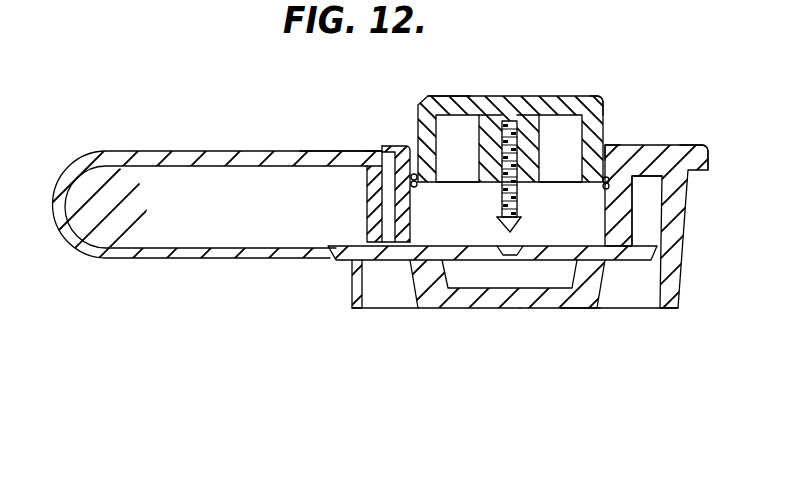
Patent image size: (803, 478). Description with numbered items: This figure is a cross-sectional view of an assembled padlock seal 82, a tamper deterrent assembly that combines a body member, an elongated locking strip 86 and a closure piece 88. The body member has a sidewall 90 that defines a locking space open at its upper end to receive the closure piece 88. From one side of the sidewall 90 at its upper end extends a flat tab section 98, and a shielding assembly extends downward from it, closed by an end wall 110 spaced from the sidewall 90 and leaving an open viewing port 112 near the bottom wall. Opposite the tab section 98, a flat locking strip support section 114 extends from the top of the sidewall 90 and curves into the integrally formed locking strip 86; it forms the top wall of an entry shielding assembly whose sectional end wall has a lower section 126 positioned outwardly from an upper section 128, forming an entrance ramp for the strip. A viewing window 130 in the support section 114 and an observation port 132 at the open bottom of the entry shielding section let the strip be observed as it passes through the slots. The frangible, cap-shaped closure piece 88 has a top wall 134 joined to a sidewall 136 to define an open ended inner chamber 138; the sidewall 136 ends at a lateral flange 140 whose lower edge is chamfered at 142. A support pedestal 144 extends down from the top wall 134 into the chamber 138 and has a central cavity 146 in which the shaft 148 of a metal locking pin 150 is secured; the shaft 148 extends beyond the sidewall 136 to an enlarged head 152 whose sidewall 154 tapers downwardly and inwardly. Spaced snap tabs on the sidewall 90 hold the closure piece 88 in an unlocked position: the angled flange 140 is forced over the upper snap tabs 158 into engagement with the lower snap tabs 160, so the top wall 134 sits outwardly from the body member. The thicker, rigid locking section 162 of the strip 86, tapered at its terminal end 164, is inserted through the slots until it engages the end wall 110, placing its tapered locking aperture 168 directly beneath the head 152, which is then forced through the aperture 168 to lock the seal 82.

The padlock seal 82 is at (616, 356).
The elongated locking strip 86 is at (55, 192).
The closure piece 88 is at (413, 150).
The sidewall 90 is at (632, 224).
The flat tab section 98 is at (692, 146).
The end wall 110 is at (680, 216).
The open viewing port 112 is at (616, 309).
The flat locking strip support section 114 is at (380, 151).
The lower section of end wall 126 is at (352, 290).
The upper section of end wall 128 is at (367, 200).
The viewing window 130 is at (345, 163).
The observation port 132 is at (376, 309).
The top wall 134 is at (447, 96).
The sidewall 136 is at (600, 110).
The inner chamber 138 is at (556, 112).
The lateral flange 140 is at (607, 146).
The chamfered lower edge 142 is at (414, 190).
The support pedestal 144 is at (478, 114).
The central cavity 146 is at (500, 170).
The shaft 148 is at (512, 137).
The metal locking pin 150 is at (517, 197).
The enlarged head 152 is at (514, 230).
The tapered sidewall of head 154 is at (505, 224).
The upper snap tabs 158 is at (416, 174).
The lower snap tabs 160 is at (605, 188).
The locking section 162 is at (403, 262).
The terminal end 164 is at (655, 261).
The locking aperture 168 is at (504, 261).